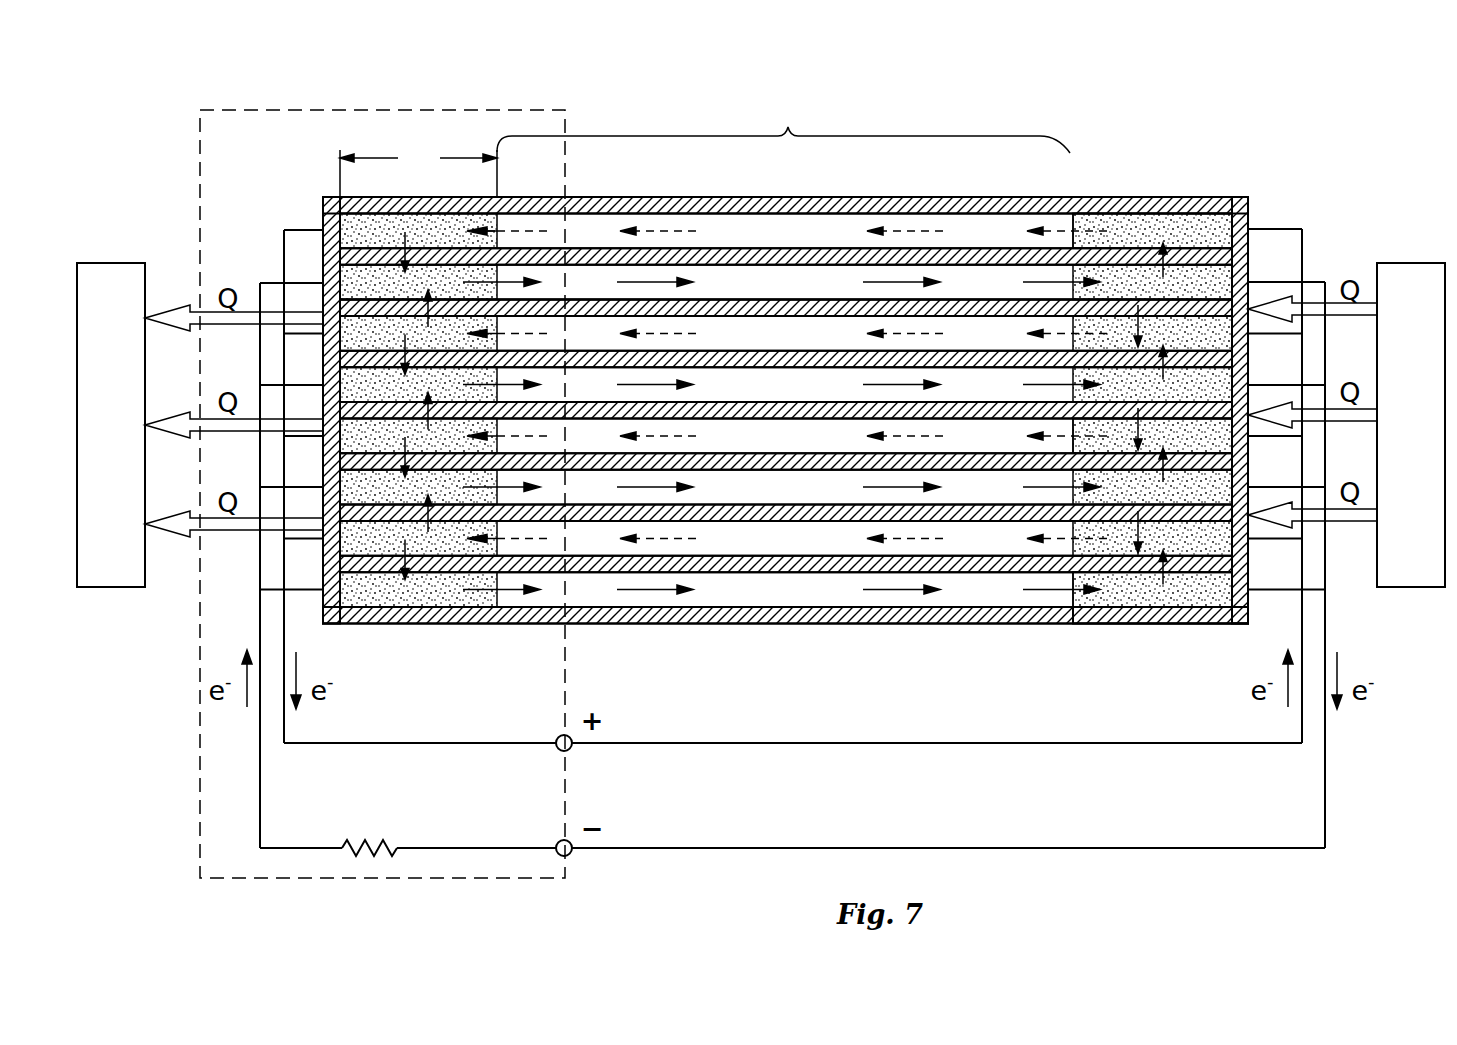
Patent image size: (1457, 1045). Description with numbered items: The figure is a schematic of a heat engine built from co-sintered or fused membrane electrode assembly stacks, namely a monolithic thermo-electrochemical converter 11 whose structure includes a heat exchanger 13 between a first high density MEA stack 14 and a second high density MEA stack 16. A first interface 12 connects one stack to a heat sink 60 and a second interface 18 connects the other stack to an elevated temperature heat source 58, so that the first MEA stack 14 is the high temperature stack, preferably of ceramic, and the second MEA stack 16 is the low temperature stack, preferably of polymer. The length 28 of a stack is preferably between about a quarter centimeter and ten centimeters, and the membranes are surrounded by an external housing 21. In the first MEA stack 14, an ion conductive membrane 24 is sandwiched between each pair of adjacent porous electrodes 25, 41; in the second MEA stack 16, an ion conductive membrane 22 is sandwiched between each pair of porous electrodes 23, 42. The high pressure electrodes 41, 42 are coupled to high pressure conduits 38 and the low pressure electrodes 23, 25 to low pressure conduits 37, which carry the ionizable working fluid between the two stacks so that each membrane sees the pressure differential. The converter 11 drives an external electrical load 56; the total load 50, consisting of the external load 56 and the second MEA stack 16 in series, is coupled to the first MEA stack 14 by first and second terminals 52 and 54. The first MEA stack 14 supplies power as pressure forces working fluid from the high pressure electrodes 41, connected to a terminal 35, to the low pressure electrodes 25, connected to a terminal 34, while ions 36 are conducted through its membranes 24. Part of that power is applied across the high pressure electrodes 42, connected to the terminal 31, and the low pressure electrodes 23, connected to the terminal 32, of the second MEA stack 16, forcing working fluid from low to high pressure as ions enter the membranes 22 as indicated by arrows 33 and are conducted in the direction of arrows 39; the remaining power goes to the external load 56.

The thermo-electrochemical converter 11 is at (1185, 86).
The first interface 12 is at (323, 560).
The heat exchanger 13 is at (783, 123).
The first high density MEA stack 14 is at (1115, 612).
The second high density MEA stack 16 is at (390, 609).
The second interface 18 is at (1248, 552).
The external housing 21 is at (646, 197).
The ion conductive membrane 22 is at (466, 565).
The porous electrode 23 is at (365, 232).
The ion conductive membrane 24 is at (1120, 250).
The porous electrode 25 is at (1203, 233).
The length 28 is at (418, 170).
The first terminal 31 is at (272, 283).
The second terminal 32 is at (290, 230).
The arrows 33 is at (432, 578).
The terminal 34 is at (1281, 229).
The terminal 35 is at (1317, 282).
The ions 36 is at (1165, 582).
The low pressure conduit 37 is at (793, 538).
The high pressure conduit 38 is at (1012, 588).
The arrows 39 is at (427, 313).
The porous electrode 41 is at (1193, 440).
The porous electrode 42 is at (405, 592).
The total load 50 is at (355, 878).
The first terminal 52 is at (558, 843).
The second terminal 54 is at (558, 738).
The external electrical load 56 is at (370, 840).
The heat source 58 is at (1428, 588).
The heat sink 60 is at (130, 588).